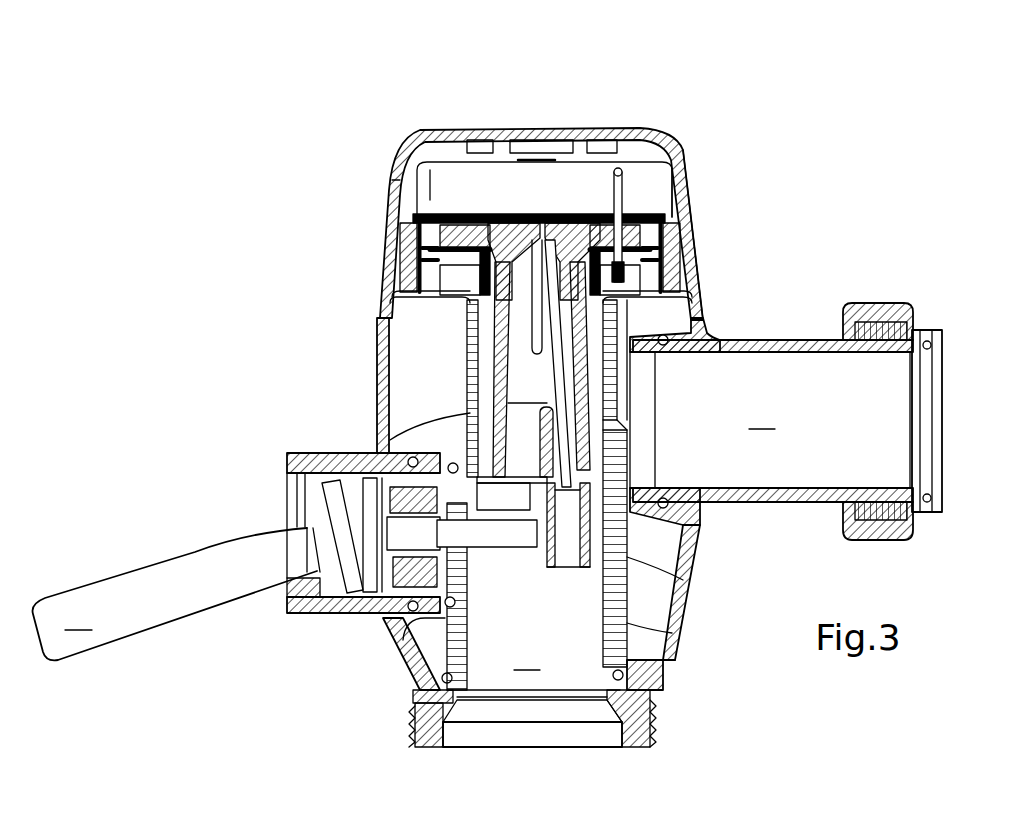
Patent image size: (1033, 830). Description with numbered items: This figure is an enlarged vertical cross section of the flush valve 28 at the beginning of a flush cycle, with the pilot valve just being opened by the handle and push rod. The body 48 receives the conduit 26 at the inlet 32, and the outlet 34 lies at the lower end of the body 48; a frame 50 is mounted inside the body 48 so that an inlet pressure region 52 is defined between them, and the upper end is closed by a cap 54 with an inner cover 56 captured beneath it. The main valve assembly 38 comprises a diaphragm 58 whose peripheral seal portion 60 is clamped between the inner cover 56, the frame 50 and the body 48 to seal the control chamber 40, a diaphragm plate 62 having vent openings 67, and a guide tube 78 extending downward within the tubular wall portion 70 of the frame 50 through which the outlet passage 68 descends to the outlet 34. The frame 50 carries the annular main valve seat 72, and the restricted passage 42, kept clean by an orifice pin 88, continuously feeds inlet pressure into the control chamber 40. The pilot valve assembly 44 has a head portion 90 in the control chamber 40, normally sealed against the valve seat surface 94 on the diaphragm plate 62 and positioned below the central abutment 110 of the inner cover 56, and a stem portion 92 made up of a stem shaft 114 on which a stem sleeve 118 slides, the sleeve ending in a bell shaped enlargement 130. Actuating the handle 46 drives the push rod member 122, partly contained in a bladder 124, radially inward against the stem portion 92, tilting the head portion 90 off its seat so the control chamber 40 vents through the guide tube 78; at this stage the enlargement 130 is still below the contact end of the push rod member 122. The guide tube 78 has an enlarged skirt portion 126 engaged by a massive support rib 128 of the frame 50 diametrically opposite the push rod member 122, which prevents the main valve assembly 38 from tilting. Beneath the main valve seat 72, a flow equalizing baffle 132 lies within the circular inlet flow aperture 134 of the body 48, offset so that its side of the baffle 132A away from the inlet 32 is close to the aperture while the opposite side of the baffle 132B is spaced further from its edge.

The conduit 26 is at (927, 433).
The flush valve 28 is at (279, 229).
The inlet 32 is at (773, 421).
The outlet 34 is at (543, 735).
The main valve assembly 38 is at (797, 193).
The control chamber 40 is at (478, 160).
The restricted passage 42 is at (625, 172).
The pilot valve assembly 44 is at (526, 58).
The handle 46 is at (177, 594).
The body 48 is at (677, 667).
The frame 50 is at (643, 710).
The inlet pressure region 52 is at (430, 400).
The cap 54 is at (638, 148).
The inner cover 56 is at (672, 190).
The diaphragm 58 is at (528, 217).
The peripheral seal portion 60 is at (390, 215).
The diaphragm plate 62 is at (480, 190).
The vent openings 67 is at (395, 183).
The outlet passage 68 is at (460, 368).
The tubular wall portion 70 is at (680, 637).
The main valve seat 72 is at (390, 270).
The guide tube 78 is at (465, 352).
The orifice pin 88 is at (690, 158).
The head portion 90 is at (577, 225).
The stem portion 92 is at (670, 515).
The valve seat surface 94 is at (695, 270).
The central abutment 110 is at (538, 158).
The stem shaft 114 is at (697, 323).
The stem sleeve 118 is at (655, 392).
The push rod member 122 is at (410, 615).
The bladder 124 is at (357, 617).
The skirt portion 126 is at (410, 420).
The support rib 128 is at (640, 563).
The bell shaped enlargement 130 is at (423, 693).
The flow equalizing baffle 132 is at (410, 310).
The side of the baffle 132A is at (383, 287).
The side of the baffle 132B is at (700, 307).
The inlet flow aperture 134 is at (697, 293).